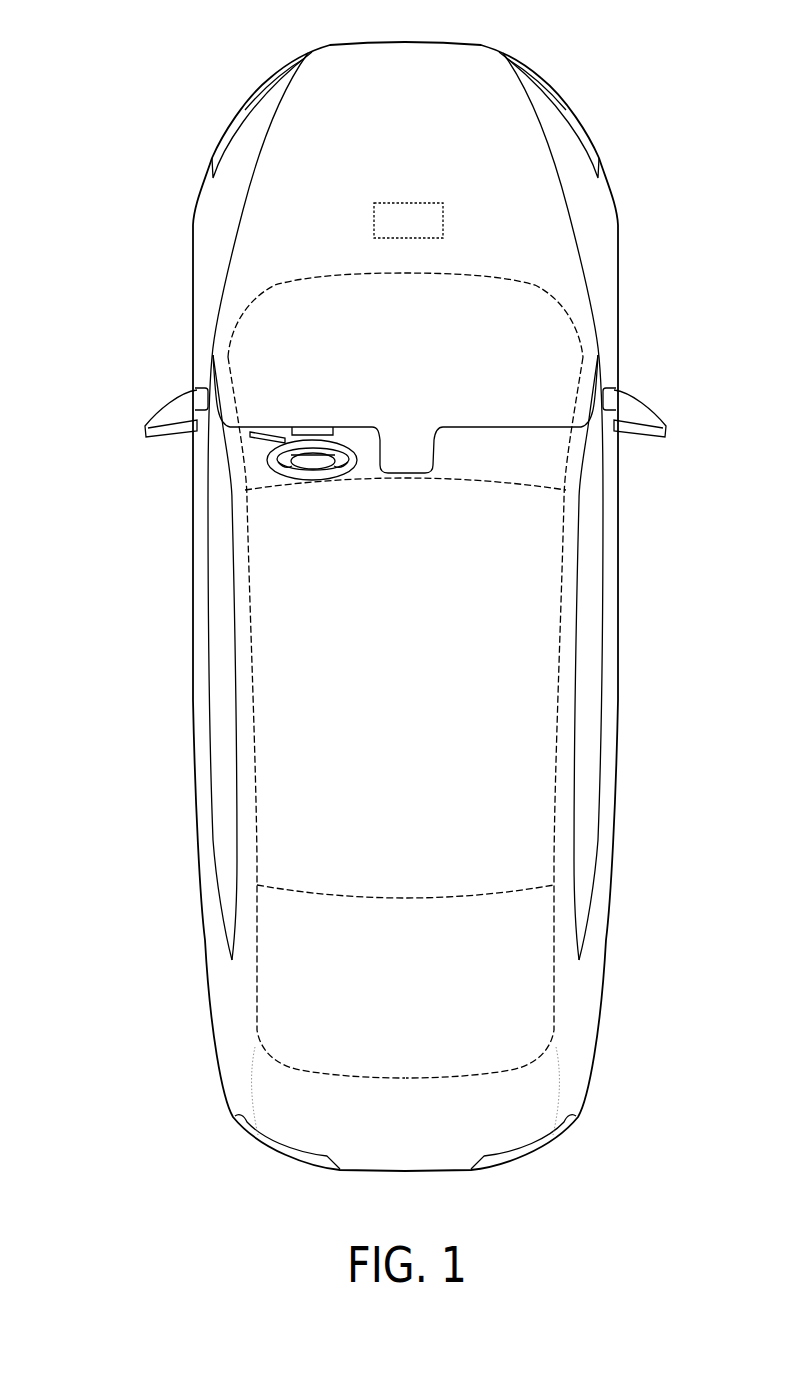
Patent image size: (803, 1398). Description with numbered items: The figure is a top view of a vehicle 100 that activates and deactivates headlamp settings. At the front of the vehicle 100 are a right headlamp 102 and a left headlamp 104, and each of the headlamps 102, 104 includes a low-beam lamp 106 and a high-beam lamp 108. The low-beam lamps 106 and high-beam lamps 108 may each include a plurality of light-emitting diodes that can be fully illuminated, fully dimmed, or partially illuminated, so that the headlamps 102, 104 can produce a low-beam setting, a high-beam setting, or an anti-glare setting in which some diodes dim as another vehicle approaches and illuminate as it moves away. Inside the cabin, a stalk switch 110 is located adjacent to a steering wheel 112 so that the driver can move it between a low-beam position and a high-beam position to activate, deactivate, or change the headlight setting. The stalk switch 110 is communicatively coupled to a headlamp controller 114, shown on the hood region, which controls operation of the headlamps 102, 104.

The vehicle 100 is at (138, 867).
The right headlamp 102 is at (616, 127).
The left headlamp 104 is at (192, 127).
The low-beam lamp 106 is at (228, 125).
The high-beam lamp 108 is at (268, 87).
The stalk switch 110 is at (268, 432).
The steering wheel 112 is at (342, 445).
The headlamp controller 114 is at (388, 232).